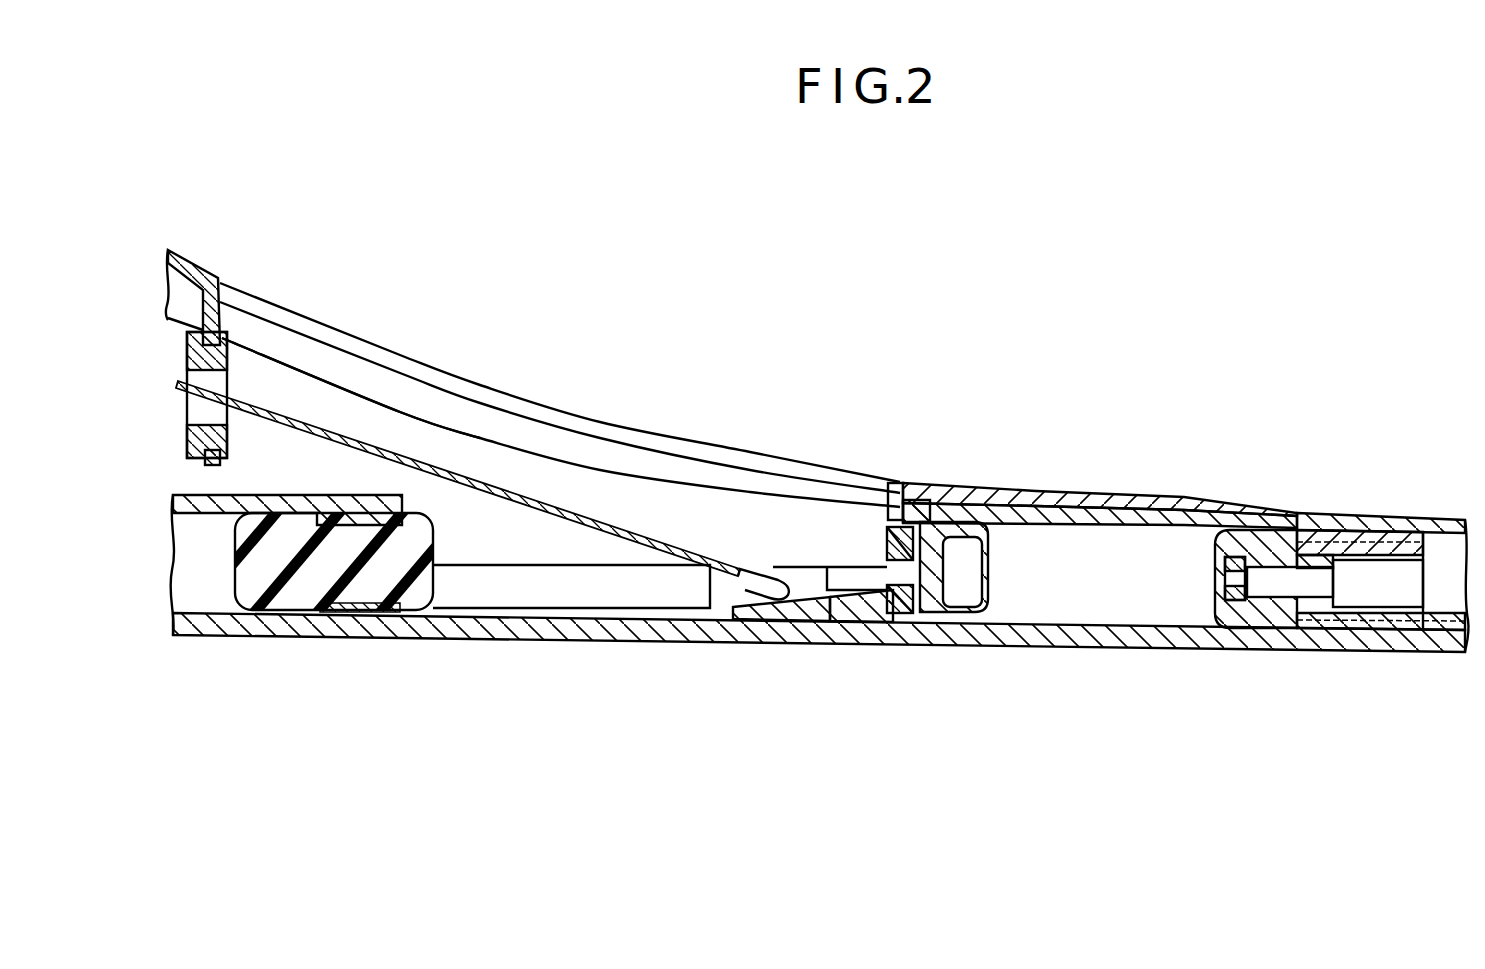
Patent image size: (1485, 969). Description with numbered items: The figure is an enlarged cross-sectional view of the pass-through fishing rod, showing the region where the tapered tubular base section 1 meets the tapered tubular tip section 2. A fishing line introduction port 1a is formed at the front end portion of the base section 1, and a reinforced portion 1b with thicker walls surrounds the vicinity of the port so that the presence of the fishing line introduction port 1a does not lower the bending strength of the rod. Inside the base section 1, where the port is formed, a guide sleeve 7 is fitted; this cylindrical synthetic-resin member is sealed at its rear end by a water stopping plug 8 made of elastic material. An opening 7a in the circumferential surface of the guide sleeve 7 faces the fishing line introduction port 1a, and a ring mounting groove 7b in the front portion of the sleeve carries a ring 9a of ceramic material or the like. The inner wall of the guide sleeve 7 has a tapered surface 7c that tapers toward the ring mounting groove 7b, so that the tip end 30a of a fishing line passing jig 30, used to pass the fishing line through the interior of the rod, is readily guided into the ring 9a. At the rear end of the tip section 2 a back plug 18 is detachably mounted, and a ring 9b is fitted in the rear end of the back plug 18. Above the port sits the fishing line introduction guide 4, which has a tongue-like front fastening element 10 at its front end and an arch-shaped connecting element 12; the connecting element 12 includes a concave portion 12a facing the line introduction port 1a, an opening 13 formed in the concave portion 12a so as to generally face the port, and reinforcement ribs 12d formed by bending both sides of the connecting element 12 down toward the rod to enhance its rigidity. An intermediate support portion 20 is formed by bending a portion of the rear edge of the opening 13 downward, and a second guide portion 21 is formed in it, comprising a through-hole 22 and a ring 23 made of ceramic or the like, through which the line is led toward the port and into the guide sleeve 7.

The base section 1 is at (1378, 517).
The fishing line introduction port 1a is at (402, 500).
The reinforced portion 1b is at (1285, 521).
The tip section 2 is at (1403, 632).
The fishing line introduction guide 4 is at (560, 384).
The guide sleeve 7 is at (613, 640).
The opening 7a is at (502, 556).
The ring mounting groove 7b is at (897, 626).
The tapered surface 7c is at (749, 597).
The water stopping plug 8 is at (287, 598).
The ring 9a is at (890, 527).
The ring 9b is at (1240, 600).
The front fastening element 10 is at (1064, 492).
The connecting element 12 is at (714, 446).
The concave portion 12a is at (627, 428).
The reinforcement ribs 12d is at (425, 400).
The opening 13 is at (782, 468).
The back plug 18 is at (1263, 522).
The intermediate support portion 20 is at (228, 283).
The second guide portion 21 is at (271, 406).
The through-hole 22 is at (237, 434).
The ring 23 is at (180, 385).
The fishing line passing jig 30 is at (663, 548).
The tip end 30a is at (756, 577).